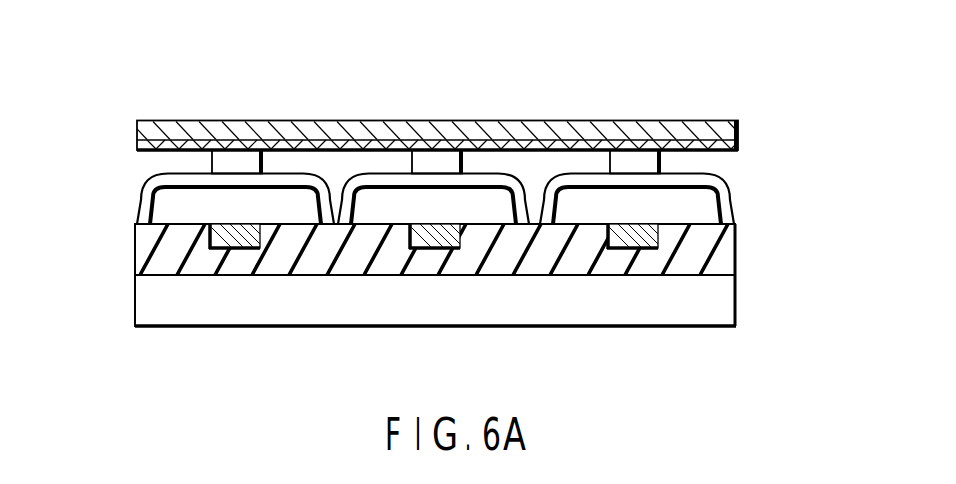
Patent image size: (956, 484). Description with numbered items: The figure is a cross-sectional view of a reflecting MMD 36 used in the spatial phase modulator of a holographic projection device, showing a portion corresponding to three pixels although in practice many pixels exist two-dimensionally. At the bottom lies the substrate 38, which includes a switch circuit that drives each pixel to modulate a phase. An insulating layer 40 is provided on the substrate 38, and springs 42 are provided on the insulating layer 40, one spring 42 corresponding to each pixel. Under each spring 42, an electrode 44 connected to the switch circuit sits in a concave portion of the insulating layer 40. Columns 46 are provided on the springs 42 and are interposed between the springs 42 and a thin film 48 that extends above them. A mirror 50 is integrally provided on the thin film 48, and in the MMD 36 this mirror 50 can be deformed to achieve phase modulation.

The MMD 36 is at (688, 80).
The substrate 38 is at (443, 305).
The insulating layer 40 is at (287, 265).
The spring 42 is at (733, 203).
The electrode 44 is at (632, 243).
The column 46 is at (651, 160).
The thin film 48 is at (739, 143).
The mirror 50 is at (739, 121).